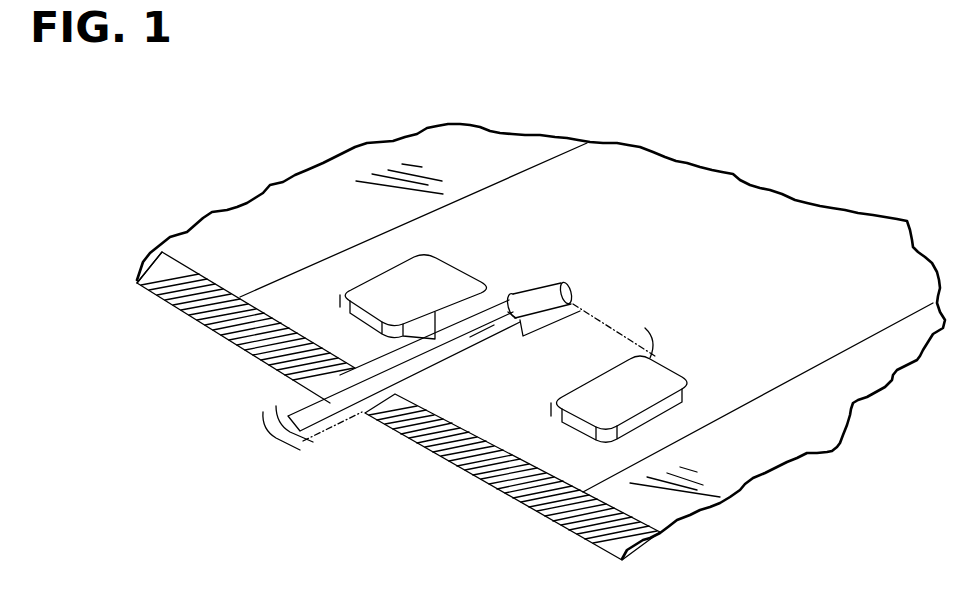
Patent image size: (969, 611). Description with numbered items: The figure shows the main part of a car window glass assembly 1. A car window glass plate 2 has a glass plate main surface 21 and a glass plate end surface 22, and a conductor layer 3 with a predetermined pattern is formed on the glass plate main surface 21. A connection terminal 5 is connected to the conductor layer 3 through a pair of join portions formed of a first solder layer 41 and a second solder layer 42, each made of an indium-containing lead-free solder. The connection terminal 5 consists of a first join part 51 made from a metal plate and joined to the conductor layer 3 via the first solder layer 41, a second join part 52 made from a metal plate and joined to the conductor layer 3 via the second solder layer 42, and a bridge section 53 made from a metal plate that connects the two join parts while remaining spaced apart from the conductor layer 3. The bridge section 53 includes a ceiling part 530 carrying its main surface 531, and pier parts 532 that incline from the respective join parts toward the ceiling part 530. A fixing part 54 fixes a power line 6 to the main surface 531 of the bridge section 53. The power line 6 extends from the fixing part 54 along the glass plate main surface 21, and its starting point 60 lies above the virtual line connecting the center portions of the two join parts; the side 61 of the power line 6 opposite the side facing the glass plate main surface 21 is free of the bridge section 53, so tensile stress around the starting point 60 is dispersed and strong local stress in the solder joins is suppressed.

The car window glass assembly 1 is at (700, 68).
The car window glass plate 2 is at (193, 245).
The conductor layer 3 is at (541, 341).
The connection terminal 5 is at (578, 243).
The power line 6 is at (372, 487).
The glass plate main surface 21 is at (246, 313).
The glass plate end surface 22 is at (514, 560).
The first solder layer 41 is at (742, 437).
The second solder layer 42 is at (352, 323).
The first join part 51 is at (619, 399).
The second join part 52 is at (413, 297).
The bridge section 53 is at (592, 278).
The fixing part 54 is at (494, 389).
The starting point 60 is at (512, 310).
The side 61 is at (437, 530).
The ceiling part 530 is at (437, 336).
The main surface 531 is at (655, 293).
The pier parts 532 is at (768, 342).